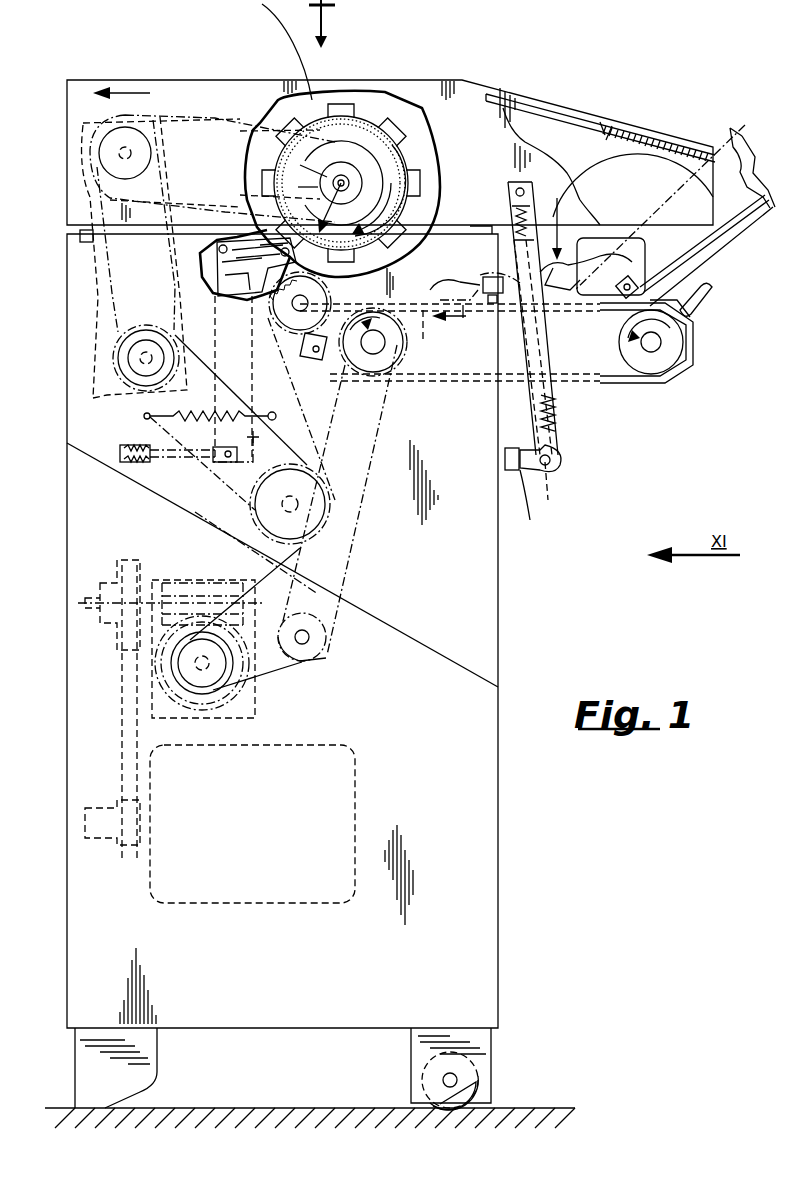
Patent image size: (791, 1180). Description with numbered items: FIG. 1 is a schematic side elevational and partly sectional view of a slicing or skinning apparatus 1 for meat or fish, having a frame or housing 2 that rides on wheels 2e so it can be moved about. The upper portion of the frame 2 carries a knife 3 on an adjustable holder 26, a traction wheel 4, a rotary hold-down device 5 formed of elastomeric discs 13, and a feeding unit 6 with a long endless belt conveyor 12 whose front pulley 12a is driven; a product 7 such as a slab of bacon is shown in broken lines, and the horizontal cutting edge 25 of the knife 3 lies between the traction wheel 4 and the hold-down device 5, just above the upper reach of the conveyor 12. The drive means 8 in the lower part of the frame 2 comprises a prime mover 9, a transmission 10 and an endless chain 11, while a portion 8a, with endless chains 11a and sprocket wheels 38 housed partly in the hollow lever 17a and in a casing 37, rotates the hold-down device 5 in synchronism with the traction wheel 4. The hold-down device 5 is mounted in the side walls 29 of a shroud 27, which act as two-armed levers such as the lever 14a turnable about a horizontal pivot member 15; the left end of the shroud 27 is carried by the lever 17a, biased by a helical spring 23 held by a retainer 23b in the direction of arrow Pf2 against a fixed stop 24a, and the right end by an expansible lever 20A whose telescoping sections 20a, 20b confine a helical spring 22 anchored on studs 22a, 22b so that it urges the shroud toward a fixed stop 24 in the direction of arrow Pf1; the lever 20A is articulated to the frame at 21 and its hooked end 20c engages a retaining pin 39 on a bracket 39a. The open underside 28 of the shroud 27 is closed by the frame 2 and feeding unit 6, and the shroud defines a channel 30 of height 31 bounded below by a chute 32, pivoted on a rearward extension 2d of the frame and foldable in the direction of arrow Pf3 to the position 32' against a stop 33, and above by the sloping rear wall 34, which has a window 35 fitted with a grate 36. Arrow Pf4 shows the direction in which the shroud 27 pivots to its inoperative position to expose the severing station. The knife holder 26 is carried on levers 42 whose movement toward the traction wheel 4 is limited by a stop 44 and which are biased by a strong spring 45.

The slicing or skinning apparatus 1 is at (538, 561).
The frame or housing 2 is at (499, 830).
The rearward extension of the frame 2d is at (660, 290).
The wheels 2e is at (482, 1090).
The knife 3 is at (270, 277).
The traction wheel 4 is at (290, 318).
The hold-down device 5 is at (372, 110).
The feeding unit 6 is at (617, 240).
The product 7 is at (477, 273).
The drive means 8 is at (327, 658).
The portion of the drive means 8a is at (97, 204).
The prime mover 9 is at (353, 758).
The transmission 10 is at (247, 703).
The endless chain 11 is at (353, 550).
The endless chains 11a is at (115, 287).
The endless belt conveyor 12 is at (600, 308).
The front pulley of the belt conveyor 12a is at (380, 363).
The parallel discs 13 is at (340, 118).
The two-armed lever 14a is at (436, 107).
The horizontal pivot member 15 is at (125, 153).
The one-armed lever 17a is at (108, 398).
The expansible and contractible lever 20A is at (520, 402).
The lower tubular section 20a is at (550, 397).
The upper tubular section 20b is at (517, 345).
The hooked end portion 20c is at (552, 463).
The pivot connection 21 is at (556, 443).
The helical spring 22 is at (552, 430).
The post or stud 22a is at (537, 443).
The post or stud 22b is at (543, 192).
The helical spring 23 is at (220, 413).
The retainer 23b is at (276, 412).
The fixed stop 24 is at (487, 227).
The fixed stop 24a is at (83, 243).
The cutting edge 25 is at (300, 263).
The knife holder 26 is at (240, 243).
The shroud 27 is at (491, 86).
The open underside of the shroud 28 is at (577, 258).
The side walls of the shroud 29 is at (472, 154).
The channel or tunnel 30 is at (653, 242).
The height of the channel 31 is at (734, 128).
The chute 32 is at (706, 251).
The folded-over position of the chute 32' is at (434, 293).
The stop 33 is at (492, 303).
The top or rear wall of the shroud 34 is at (633, 126).
The observation opening or window 35 is at (570, 110).
The grate 36 is at (541, 112).
The gear box or casing 37 is at (240, 132).
The sprocket wheels 38 is at (193, 140).
The retaining or coupling pins 39 is at (541, 498).
The brackets 39a is at (546, 480).
The levers 42 is at (243, 437).
The stop 44 is at (222, 245).
The spring 45 is at (140, 467).
The arrow Pf1 is at (563, 212).
The arrow Pf2 is at (129, 91).
The arrow Pf3 is at (667, 160).
The arrow Pf4 is at (285, 50).